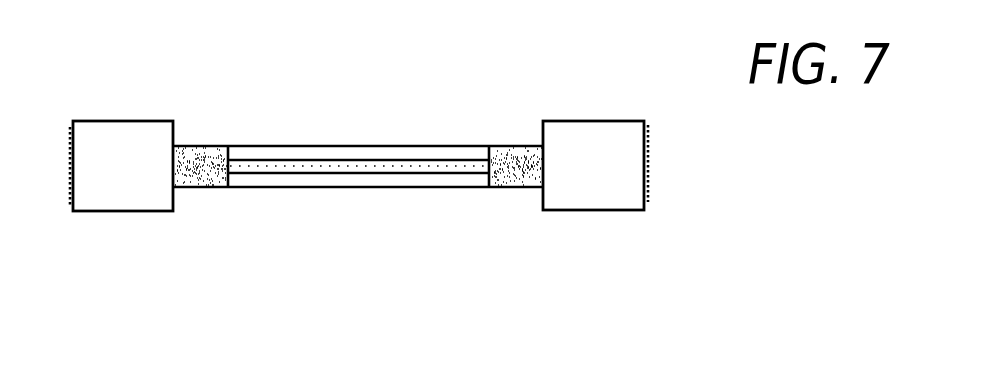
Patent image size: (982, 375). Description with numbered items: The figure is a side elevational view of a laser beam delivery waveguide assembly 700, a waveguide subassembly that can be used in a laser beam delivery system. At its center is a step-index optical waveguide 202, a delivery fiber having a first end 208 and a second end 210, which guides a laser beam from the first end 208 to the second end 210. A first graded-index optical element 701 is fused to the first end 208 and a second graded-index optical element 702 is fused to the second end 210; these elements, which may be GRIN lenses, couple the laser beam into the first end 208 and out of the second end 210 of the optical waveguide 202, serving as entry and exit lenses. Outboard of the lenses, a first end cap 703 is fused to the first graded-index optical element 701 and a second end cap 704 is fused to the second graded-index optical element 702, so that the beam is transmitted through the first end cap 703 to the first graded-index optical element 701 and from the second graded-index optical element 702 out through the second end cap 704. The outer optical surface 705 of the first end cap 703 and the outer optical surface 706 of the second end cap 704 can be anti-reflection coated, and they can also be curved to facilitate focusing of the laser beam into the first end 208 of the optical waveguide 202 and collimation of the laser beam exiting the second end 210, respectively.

The laser beam delivery waveguide assembly 700 is at (470, 46).
The step-index optical waveguide 202 is at (355, 188).
The first end 208 is at (228, 152).
The second end 210 is at (489, 172).
The first graded-index optical element 701 is at (207, 177).
The second graded-index optical element 702 is at (532, 180).
The first end cap 703 is at (130, 204).
The second end cap 704 is at (593, 197).
The outer optical surface 705 is at (67, 151).
The outer optical surface 706 is at (653, 182).